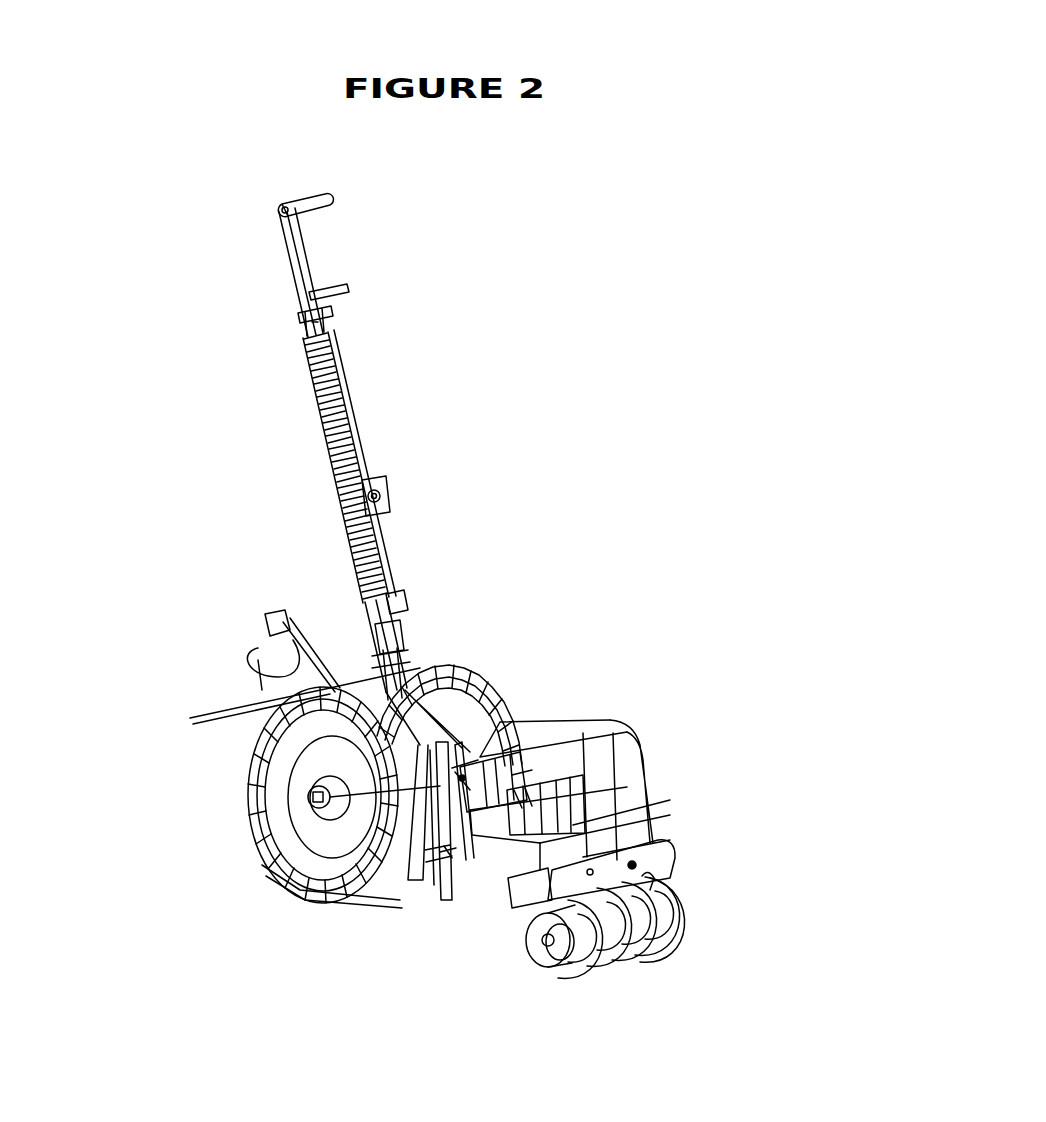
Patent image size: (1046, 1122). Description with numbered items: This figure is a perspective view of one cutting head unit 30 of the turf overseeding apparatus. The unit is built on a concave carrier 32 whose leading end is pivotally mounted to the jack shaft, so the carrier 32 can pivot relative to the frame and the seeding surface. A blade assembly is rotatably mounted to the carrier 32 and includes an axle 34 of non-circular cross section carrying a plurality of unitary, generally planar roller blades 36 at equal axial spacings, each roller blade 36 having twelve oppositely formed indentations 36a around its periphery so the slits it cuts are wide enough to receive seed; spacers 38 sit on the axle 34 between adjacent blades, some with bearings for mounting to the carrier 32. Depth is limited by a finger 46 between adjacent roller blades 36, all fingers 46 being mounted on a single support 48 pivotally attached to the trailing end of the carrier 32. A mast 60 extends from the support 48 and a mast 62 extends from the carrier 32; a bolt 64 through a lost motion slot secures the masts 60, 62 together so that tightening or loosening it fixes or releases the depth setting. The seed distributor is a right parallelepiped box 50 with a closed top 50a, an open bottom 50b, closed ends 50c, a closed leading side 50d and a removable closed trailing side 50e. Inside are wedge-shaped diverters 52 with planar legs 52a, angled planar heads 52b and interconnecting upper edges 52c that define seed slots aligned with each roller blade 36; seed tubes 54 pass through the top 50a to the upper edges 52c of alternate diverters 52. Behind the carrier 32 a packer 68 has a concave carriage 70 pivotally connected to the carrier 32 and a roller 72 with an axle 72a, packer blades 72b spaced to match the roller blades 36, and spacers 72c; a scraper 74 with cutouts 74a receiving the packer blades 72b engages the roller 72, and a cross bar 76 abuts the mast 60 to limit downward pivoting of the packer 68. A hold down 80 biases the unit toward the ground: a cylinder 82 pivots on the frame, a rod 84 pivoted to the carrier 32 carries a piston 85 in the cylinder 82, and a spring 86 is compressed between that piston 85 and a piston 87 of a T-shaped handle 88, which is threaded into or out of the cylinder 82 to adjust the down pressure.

The cutting head unit 30 is at (481, 368).
The concave carrier 32 is at (276, 616).
The axle 34 is at (318, 798).
The roller blade 36 is at (343, 900).
The indentation 36a is at (250, 768).
The spacer 38 is at (320, 822).
The finger 46 is at (290, 850).
The support 48 is at (420, 863).
The box 50 is at (523, 967).
The closed top 50a is at (590, 812).
The open bottom 50b is at (530, 935).
The closed ends 50c is at (582, 857).
The closed leading side 50d is at (437, 887).
The closed trailing side 50e is at (573, 825).
The diverter 52 is at (443, 887).
The planar leg 52a is at (457, 887).
The angled planar head 52b is at (442, 850).
The upper edge 52c is at (447, 850).
The seed tube 54 is at (460, 778).
The mast 60 is at (460, 786).
The mast 62 is at (550, 717).
The bolt 64 is at (473, 800).
The packer 68 is at (707, 918).
The concave carriage 70 is at (522, 780).
The roller 72 is at (650, 953).
The axle 72a is at (548, 942).
The packer blade 72b is at (683, 932).
The spacer 72c is at (565, 947).
The scraper 74 is at (655, 850).
The cutout 74a is at (647, 878).
The cross bar 76 is at (500, 740).
The hold down 80 is at (333, 281).
The cylinder 82 is at (385, 546).
The rod 84 is at (388, 636).
The piston 85 is at (396, 598).
The spring 86 is at (344, 400).
The piston 87 is at (333, 319).
The T-shaped handle 88 is at (300, 205).